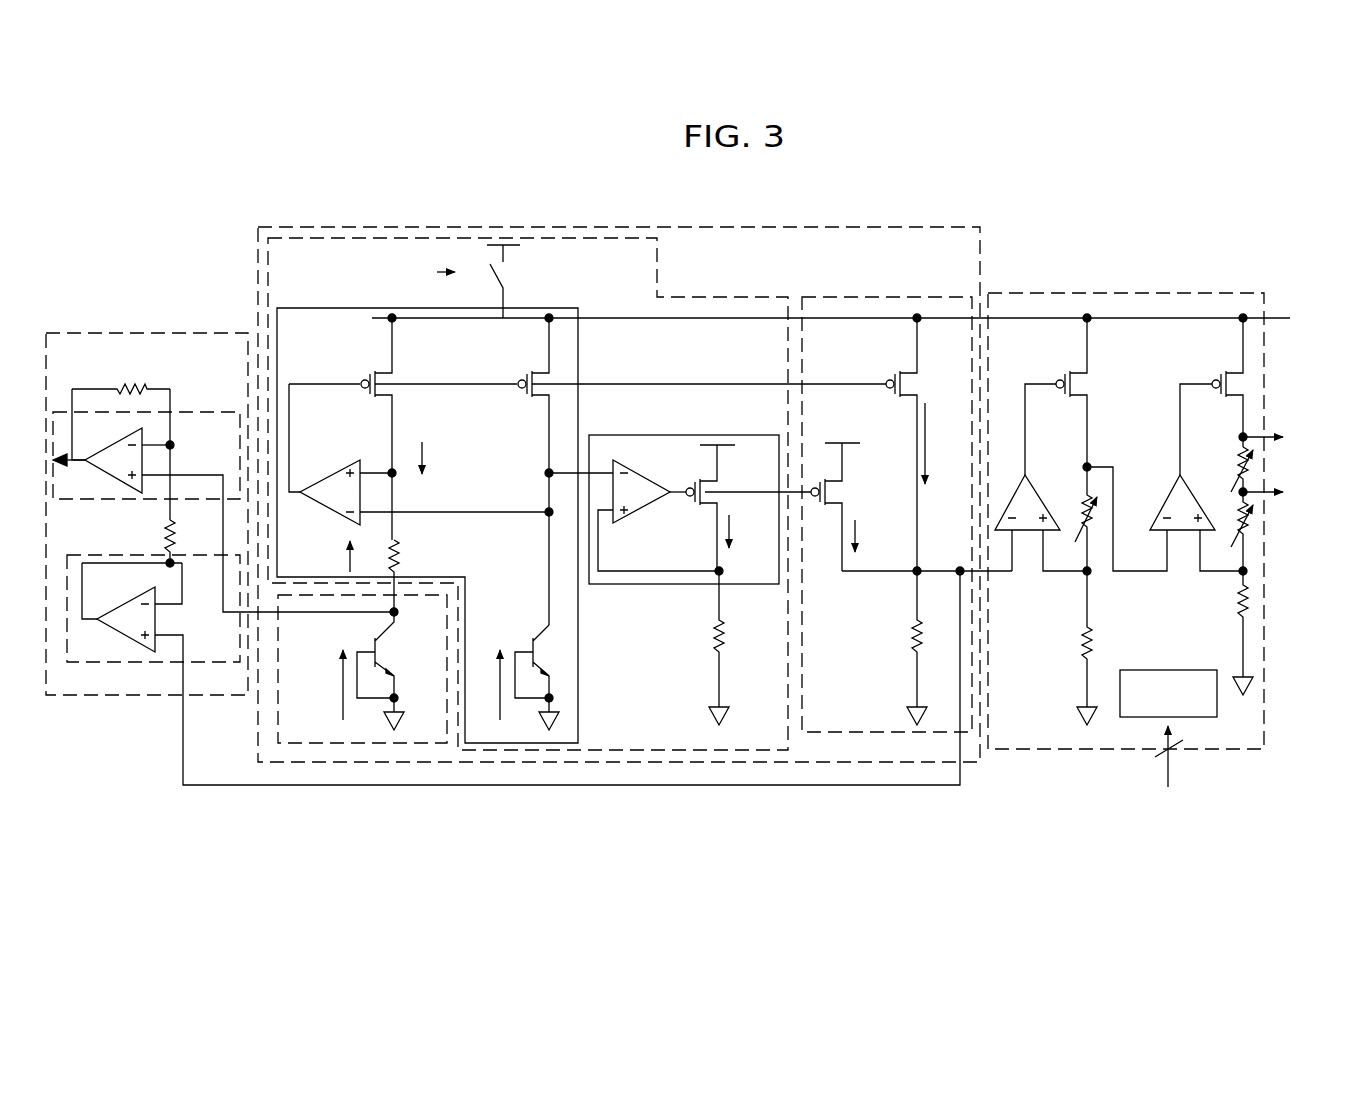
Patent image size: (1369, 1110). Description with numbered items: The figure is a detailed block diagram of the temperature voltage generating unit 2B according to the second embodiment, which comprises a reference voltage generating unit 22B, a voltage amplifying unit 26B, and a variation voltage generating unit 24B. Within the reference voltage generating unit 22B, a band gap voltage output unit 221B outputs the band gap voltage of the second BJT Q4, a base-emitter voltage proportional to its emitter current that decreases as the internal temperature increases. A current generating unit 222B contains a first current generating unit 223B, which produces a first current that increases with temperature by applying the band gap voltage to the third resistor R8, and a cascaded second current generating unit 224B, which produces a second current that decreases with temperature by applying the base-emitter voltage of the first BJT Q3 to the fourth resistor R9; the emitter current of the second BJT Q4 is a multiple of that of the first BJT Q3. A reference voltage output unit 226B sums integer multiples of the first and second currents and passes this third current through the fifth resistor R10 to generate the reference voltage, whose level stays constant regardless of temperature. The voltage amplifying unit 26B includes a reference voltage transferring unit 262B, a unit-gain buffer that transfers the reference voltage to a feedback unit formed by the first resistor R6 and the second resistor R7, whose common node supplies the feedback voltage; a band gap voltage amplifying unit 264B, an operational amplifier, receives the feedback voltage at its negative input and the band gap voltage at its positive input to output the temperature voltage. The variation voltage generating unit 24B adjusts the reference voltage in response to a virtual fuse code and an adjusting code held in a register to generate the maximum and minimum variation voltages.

The temperature voltage generating unit 2B is at (1072, 175).
The reference voltage generating unit 22B is at (912, 228).
The current generating unit 222B is at (727, 297).
The band gap voltage output unit 221B is at (343, 745).
The first current generating unit 223B is at (578, 686).
The second current generating unit 224B is at (655, 585).
The reference voltage output unit 226B is at (898, 297).
The variation voltage generating unit 24B is at (1196, 293).
The voltage amplifying unit 26B is at (116, 334).
The band gap voltage amplifying unit 264B is at (92, 500).
The reference voltage transferring unit 262B is at (84, 663).
The first resistor R6 is at (158, 541).
The second resistor R7 is at (121, 376).
The third resistor R8 is at (408, 576).
The fourth resistor R9 is at (731, 648).
The fifth resistor R10 is at (902, 648).
The first BJT Q3 is at (544, 677).
The second BJT Q4 is at (386, 671).